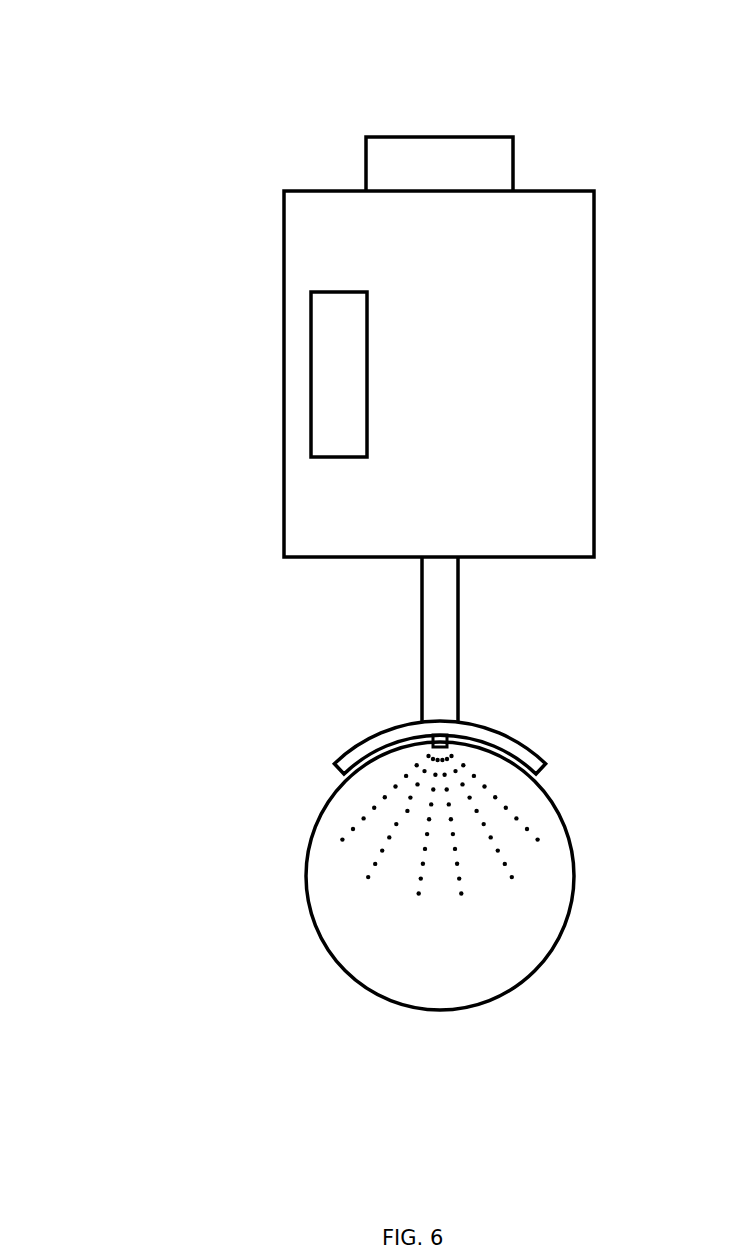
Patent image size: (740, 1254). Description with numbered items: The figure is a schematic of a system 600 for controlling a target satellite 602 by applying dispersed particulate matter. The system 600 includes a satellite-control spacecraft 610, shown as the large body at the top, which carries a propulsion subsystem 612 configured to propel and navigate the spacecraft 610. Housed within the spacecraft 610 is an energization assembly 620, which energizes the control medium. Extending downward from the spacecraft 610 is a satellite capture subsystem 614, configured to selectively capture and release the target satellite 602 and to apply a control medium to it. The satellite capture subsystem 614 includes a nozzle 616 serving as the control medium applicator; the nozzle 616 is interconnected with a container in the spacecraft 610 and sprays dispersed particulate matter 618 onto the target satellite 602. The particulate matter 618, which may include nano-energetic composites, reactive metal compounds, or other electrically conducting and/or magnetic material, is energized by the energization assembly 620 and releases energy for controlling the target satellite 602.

The system 600 is at (148, 101).
The satellite-control spacecraft 610 is at (323, 181).
The propulsion subsystem 612 is at (421, 173).
The energization assembly 620 is at (320, 367).
The satellite capture subsystem 614 is at (331, 742).
The nozzle 616 is at (437, 737).
The dispersed particulate matter 618 is at (527, 830).
The target satellite 602 is at (421, 966).